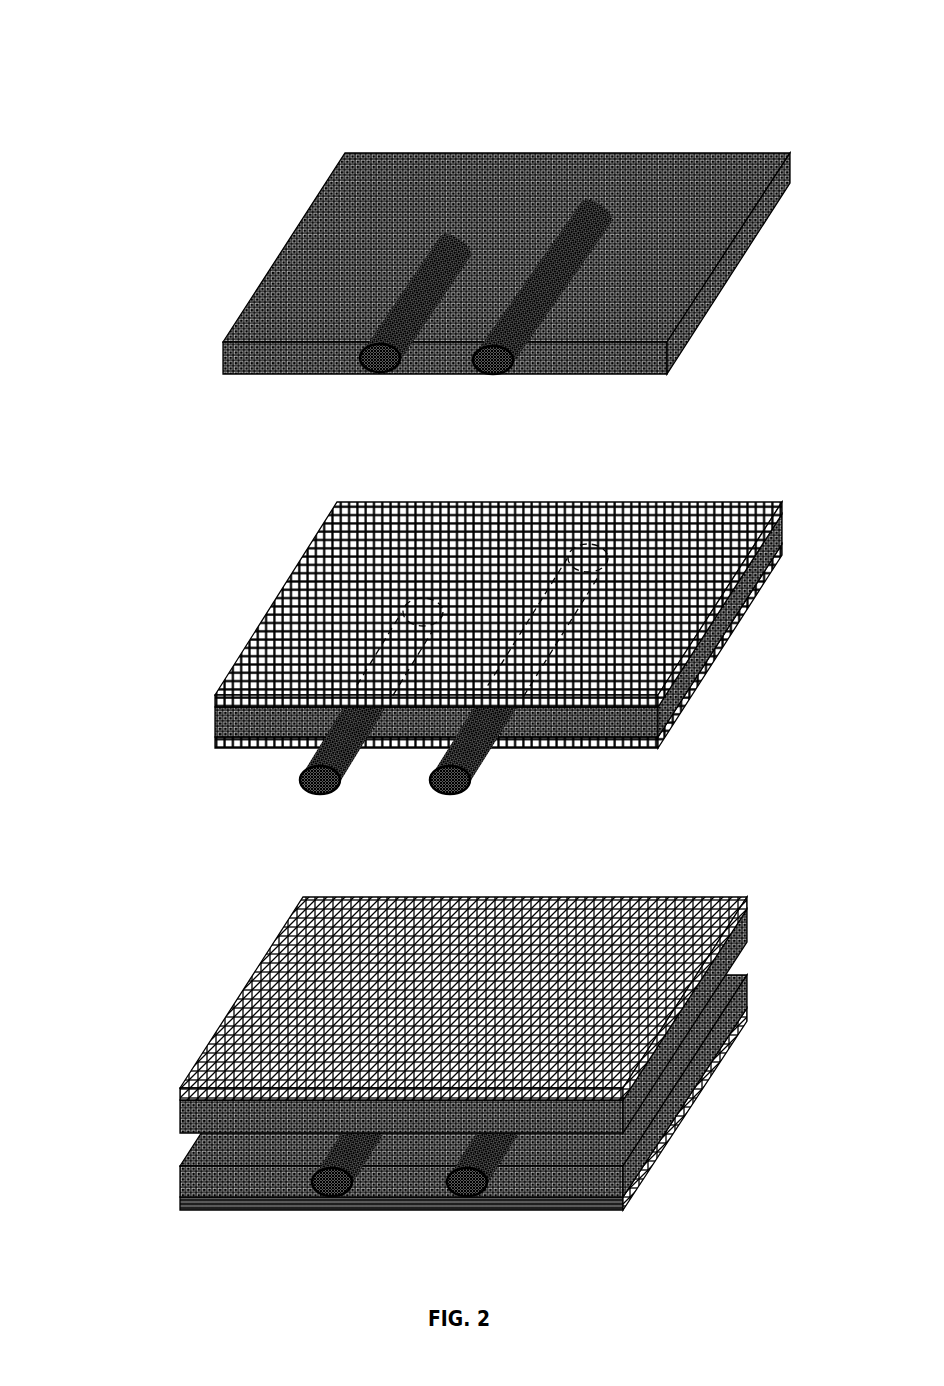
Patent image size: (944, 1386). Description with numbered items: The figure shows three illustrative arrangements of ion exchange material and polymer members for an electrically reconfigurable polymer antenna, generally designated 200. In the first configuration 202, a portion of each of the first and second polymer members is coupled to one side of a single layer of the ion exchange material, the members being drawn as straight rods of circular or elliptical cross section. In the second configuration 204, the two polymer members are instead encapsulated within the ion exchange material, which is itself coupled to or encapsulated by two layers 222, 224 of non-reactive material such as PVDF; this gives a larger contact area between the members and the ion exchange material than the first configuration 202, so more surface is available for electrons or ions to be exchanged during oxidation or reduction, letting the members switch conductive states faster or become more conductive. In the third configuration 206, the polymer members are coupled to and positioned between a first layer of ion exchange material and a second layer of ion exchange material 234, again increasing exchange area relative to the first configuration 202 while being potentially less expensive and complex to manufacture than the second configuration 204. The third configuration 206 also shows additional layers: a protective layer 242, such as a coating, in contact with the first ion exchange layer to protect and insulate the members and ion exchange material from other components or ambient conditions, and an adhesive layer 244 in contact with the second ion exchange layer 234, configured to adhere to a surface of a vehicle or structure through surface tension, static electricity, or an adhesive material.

The ERP antenna configurations 200 is at (89, 44).
The first configuration 202 is at (108, 277).
The second configuration 204 is at (110, 627).
The third configuration 206 is at (108, 1107).
The layer of non-reactive material 222 is at (788, 506).
The layer of non-reactive material 224 is at (786, 562).
The second layer of ion exchange material 234 is at (750, 996).
The protective layer 242 is at (750, 898).
The adhesive layer 244 is at (750, 1022).